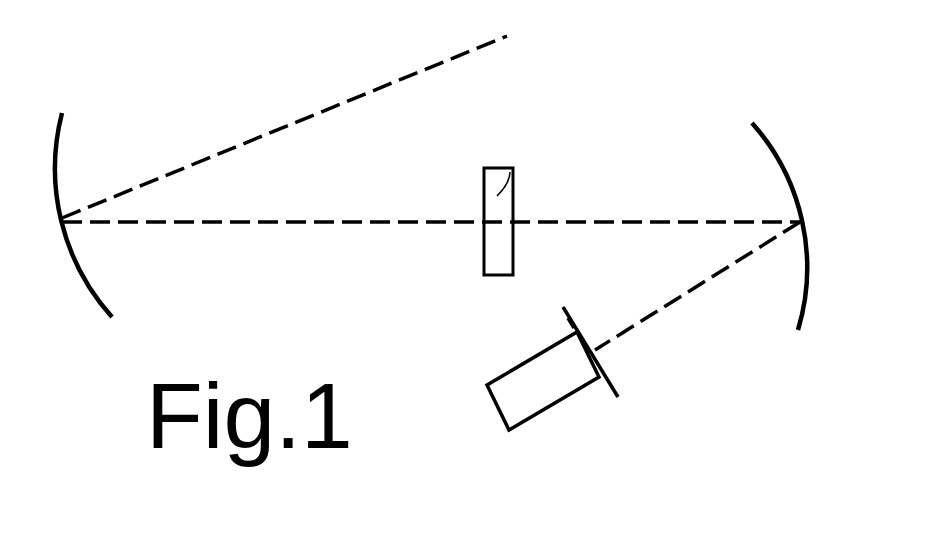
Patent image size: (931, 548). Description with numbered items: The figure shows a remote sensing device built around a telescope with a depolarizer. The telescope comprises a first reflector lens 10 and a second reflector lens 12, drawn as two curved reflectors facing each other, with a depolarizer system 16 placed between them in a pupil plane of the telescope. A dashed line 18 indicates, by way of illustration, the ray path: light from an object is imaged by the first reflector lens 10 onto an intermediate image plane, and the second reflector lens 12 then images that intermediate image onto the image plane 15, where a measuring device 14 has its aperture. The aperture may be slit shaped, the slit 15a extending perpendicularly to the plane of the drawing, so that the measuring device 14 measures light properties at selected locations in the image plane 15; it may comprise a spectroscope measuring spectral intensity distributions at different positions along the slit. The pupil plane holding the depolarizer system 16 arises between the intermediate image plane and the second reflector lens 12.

The first reflector lens 10 is at (82, 280).
The second reflector lens 12 is at (792, 327).
The measuring device 14 is at (545, 415).
The image plane 15 is at (613, 377).
The slit 15a is at (595, 350).
The depolarizer system 16 is at (512, 168).
The dashed line 18 is at (237, 220).